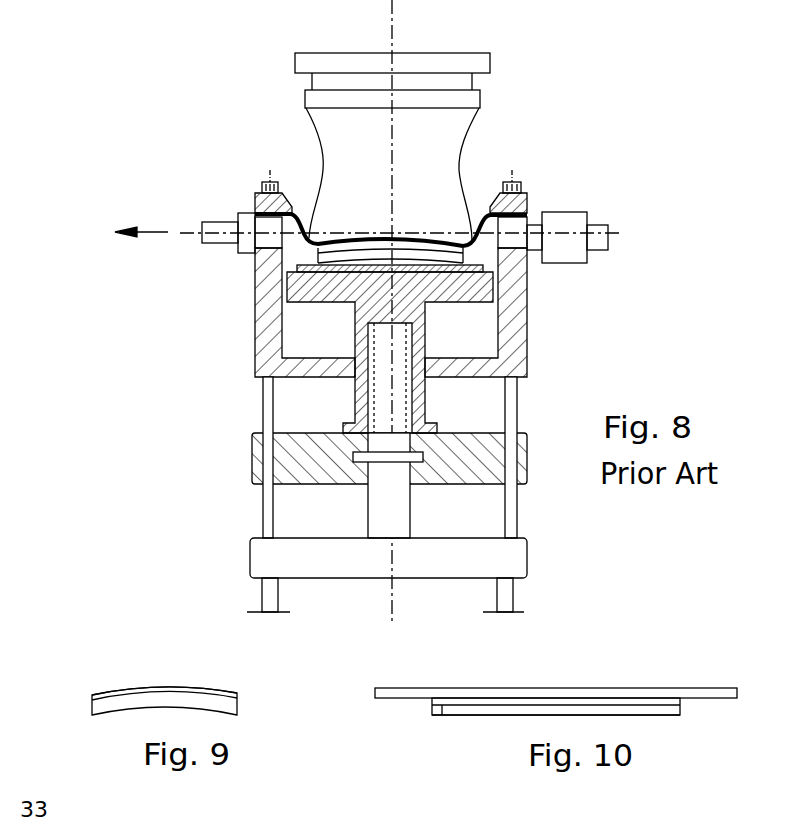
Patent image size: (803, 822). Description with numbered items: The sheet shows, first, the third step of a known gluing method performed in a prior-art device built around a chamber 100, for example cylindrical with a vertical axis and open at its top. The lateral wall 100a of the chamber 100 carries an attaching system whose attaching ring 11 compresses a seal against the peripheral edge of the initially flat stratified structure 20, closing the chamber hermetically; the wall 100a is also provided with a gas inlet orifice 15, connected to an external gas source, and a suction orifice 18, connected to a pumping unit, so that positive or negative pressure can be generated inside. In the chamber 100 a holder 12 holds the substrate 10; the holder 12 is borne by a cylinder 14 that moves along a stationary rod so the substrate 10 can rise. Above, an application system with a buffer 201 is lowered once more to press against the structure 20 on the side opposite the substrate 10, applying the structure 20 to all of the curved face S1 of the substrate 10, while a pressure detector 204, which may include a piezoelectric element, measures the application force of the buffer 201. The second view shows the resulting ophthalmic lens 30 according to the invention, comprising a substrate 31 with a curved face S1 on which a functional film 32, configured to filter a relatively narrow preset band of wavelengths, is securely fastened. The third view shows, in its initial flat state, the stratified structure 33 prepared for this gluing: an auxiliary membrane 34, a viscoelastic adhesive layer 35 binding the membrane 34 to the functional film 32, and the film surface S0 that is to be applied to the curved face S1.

In FIG. 8, the pressure detector 204 is at (333, 82).
In FIG. 8, the buffer 201 is at (467, 136).
In FIG. 8, the stratified structure 20 is at (293, 213).
In FIG. 8, the attaching ring 11 is at (497, 200).
In FIG. 8, the suction orifice 18 is at (215, 228).
In FIG. 8, the gas inlet orifice 15 is at (577, 217).
In FIG. 8, the chamber 100 is at (545, 155).
In FIG. 8, the lateral wall 100a is at (272, 259).
In FIG. 8, the substrate 10 is at (292, 255).
In FIG. 8, the holder 12 is at (300, 267).
In FIG. 8, the cylinder 14 is at (487, 323).
In FIG. 9, the ophthalmic lens 30 is at (136, 678).
In FIG. 9, the substrate 31 is at (107, 705).
In FIG. 9, the functional film 32 is at (122, 688).
In FIG. 10, the functional film 32 is at (480, 710).
In FIG. 9, the curved face S1 is at (167, 686).
In FIG. 10, the stratified structure 33 is at (565, 684).
In FIG. 10, the auxiliary membrane 34 is at (625, 697).
In FIG. 10, the viscoelastic adhesive layer 35 is at (442, 705).
In FIG. 10, the film surface S0 is at (672, 720).